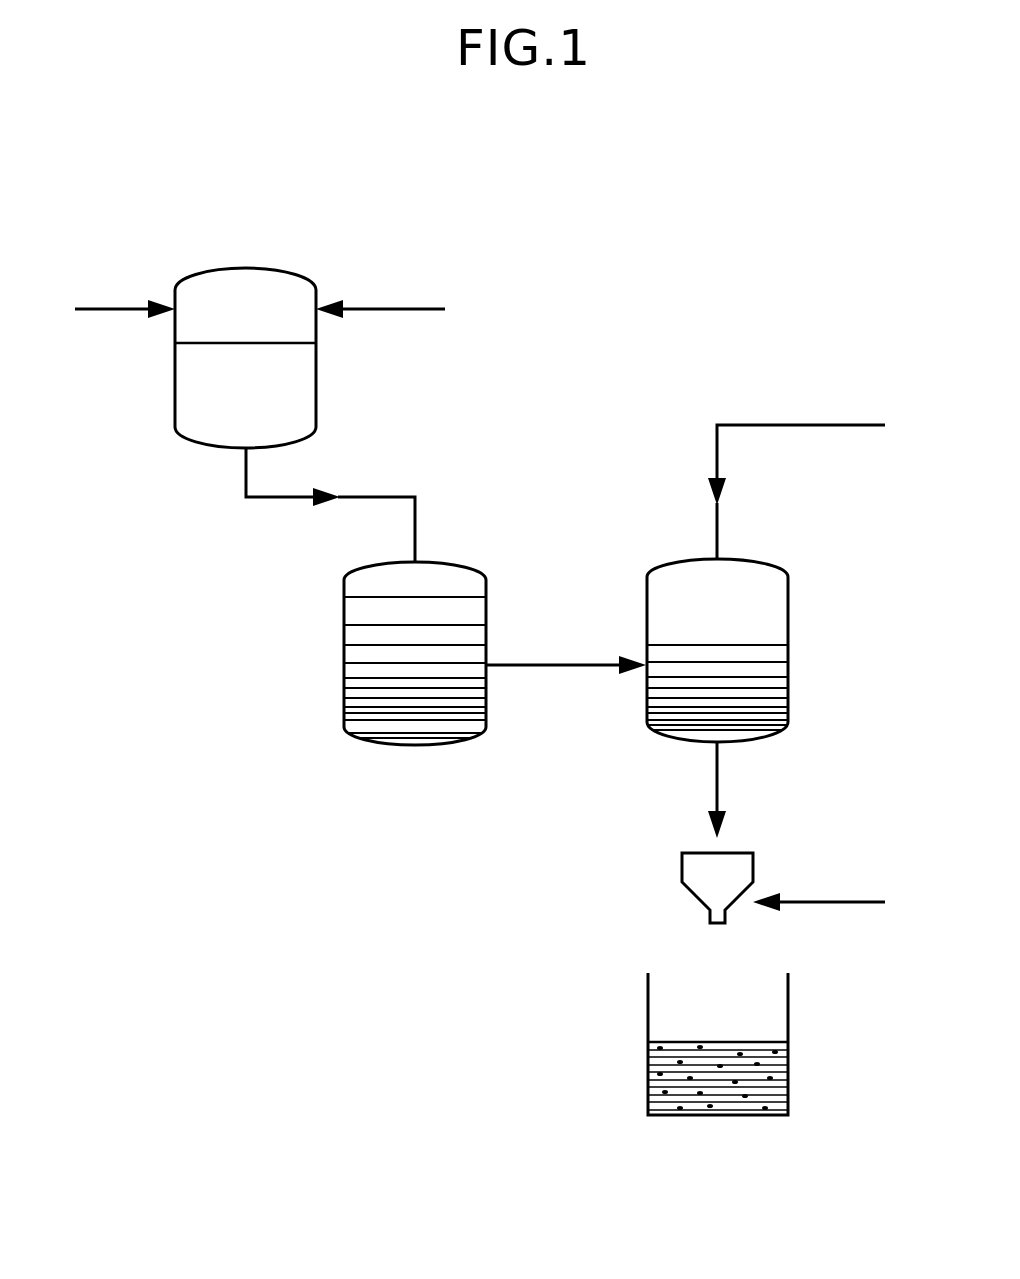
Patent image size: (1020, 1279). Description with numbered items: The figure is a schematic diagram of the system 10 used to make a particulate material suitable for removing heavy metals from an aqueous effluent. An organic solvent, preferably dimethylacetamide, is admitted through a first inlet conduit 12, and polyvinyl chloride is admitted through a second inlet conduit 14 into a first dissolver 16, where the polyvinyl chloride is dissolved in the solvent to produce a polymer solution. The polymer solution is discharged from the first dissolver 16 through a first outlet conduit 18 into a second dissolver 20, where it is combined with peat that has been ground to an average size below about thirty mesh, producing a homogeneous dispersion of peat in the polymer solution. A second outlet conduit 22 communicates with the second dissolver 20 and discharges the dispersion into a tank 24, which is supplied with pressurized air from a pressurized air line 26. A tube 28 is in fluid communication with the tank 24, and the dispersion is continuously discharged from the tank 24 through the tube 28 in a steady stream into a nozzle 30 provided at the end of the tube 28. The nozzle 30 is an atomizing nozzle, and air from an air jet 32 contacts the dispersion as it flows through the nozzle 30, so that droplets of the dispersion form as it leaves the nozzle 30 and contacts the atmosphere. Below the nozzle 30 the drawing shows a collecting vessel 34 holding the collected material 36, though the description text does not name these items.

The system 10 is at (362, 825).
The first inlet conduit 12 is at (124, 307).
The second inlet conduit 14 is at (393, 303).
The first dissolver 16 is at (183, 440).
The first outlet conduit 18 is at (267, 502).
The second dissolver 20 is at (346, 702).
The second outlet conduit 22 is at (541, 664).
The tank 24 is at (760, 560).
The pressurized air line 26 is at (795, 422).
The tube 28 is at (720, 795).
The nozzle 30 is at (693, 896).
The air jet 32 is at (836, 905).
The collection container 34 is at (789, 1030).
The collected mixture 36 is at (733, 1063).